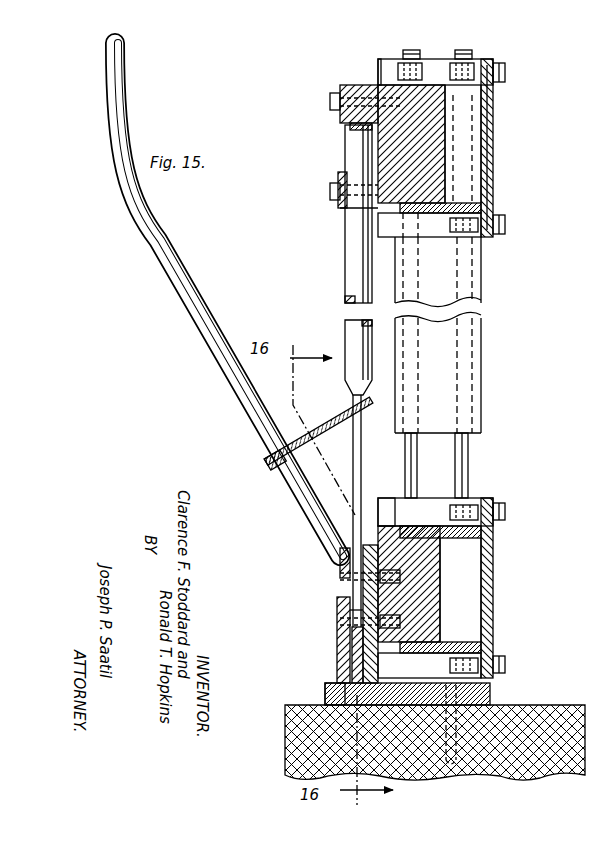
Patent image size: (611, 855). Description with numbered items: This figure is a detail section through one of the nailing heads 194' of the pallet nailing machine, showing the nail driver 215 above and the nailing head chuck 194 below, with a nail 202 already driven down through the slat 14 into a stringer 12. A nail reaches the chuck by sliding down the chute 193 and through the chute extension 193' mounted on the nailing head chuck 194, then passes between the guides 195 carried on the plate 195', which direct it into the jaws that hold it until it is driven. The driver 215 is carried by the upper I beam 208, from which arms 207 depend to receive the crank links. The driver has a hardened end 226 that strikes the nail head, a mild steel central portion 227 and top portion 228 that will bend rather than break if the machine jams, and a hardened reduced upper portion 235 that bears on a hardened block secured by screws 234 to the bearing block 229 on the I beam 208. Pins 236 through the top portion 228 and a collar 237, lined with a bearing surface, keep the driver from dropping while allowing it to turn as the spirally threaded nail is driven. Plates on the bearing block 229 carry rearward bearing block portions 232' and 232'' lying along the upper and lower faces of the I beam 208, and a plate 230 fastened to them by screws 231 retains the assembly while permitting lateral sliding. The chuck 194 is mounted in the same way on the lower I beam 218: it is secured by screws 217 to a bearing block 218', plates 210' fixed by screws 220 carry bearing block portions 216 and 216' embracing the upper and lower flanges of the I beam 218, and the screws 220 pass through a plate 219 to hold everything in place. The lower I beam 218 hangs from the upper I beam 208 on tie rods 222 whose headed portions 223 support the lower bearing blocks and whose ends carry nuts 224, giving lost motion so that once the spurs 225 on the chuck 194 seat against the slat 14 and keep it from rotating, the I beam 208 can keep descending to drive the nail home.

The stringer 12 is at (515, 738).
The slat 14 is at (492, 690).
The chute 193 is at (232, 310).
The chute extension 193' is at (306, 464).
The nailing head chuck 194 is at (522, 136).
The nailing head 194' is at (319, 534).
The guides 195 is at (324, 619).
The plate 195' is at (320, 655).
The nail 202 is at (375, 675).
The arms 207 is at (488, 322).
The I beam 208 is at (455, 130).
The plates 210' is at (384, 488).
The nail driver 215 is at (345, 258).
The bearing block portion 216 is at (435, 499).
The bearing block portion 216' is at (472, 631).
The screws 217 is at (365, 630).
The I beam 218 is at (463, 584).
The bearing block 218' is at (476, 541).
The plate 219 is at (490, 592).
The screws 220 is at (506, 512).
The tie rods 222 is at (470, 455).
The headed portions 223 is at (380, 76).
The nuts 224 is at (405, 57).
The spurs 225 is at (328, 695).
The ends of drivers 226 is at (340, 576).
The central portion 227 is at (345, 340).
The top portion 228 is at (345, 126).
The bearing blocks 229 is at (487, 150).
The plate 230 is at (490, 98).
The screws 231 is at (506, 74).
The bearing block portion 232' is at (435, 52).
The bearing block portion 232'' is at (429, 239).
The screws 234 is at (340, 90).
The reduced upper portion 235 is at (352, 145).
The pins 236 is at (340, 170).
The collar 237 is at (340, 205).